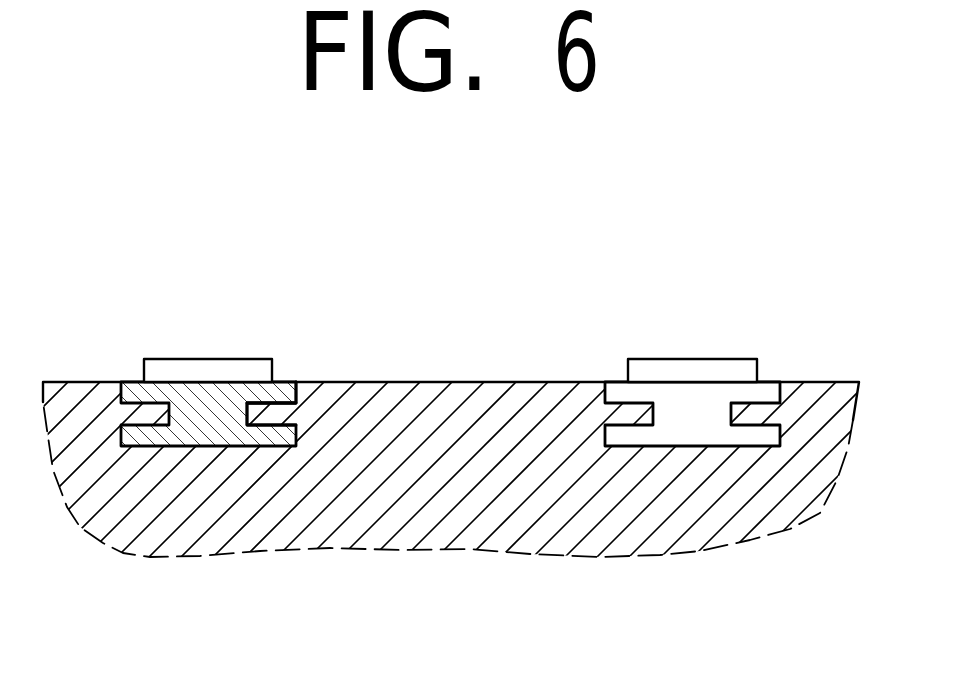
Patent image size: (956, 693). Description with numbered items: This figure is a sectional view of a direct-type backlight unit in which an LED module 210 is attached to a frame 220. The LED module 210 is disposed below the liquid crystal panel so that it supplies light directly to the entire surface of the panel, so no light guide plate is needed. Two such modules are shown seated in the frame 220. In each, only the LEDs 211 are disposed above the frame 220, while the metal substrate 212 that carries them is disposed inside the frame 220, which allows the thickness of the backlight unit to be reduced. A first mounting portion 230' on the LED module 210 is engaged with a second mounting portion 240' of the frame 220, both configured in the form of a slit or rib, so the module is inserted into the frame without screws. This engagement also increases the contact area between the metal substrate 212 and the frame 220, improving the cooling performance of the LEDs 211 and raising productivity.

The LED module 210 is at (195, 314).
The LEDs 211 is at (195, 365).
The metal substrate 212 is at (130, 381).
The frame 220 is at (289, 506).
The first mounting portion 230' is at (287, 337).
The second mounting portion 240' is at (336, 354).